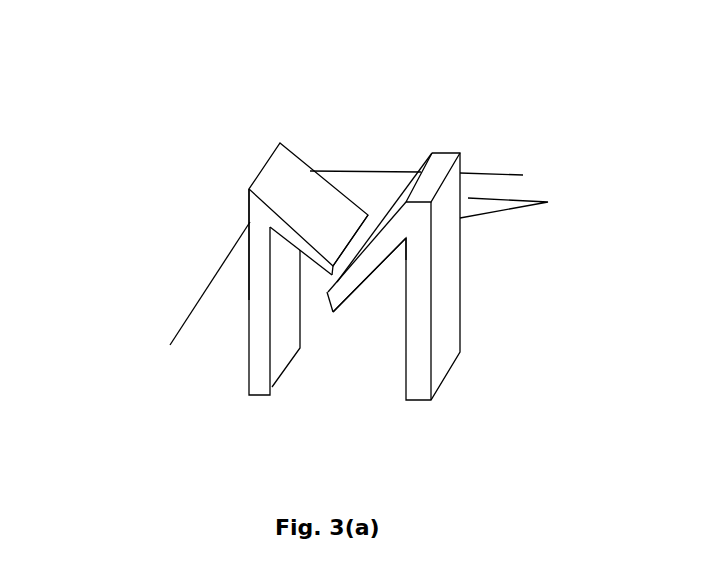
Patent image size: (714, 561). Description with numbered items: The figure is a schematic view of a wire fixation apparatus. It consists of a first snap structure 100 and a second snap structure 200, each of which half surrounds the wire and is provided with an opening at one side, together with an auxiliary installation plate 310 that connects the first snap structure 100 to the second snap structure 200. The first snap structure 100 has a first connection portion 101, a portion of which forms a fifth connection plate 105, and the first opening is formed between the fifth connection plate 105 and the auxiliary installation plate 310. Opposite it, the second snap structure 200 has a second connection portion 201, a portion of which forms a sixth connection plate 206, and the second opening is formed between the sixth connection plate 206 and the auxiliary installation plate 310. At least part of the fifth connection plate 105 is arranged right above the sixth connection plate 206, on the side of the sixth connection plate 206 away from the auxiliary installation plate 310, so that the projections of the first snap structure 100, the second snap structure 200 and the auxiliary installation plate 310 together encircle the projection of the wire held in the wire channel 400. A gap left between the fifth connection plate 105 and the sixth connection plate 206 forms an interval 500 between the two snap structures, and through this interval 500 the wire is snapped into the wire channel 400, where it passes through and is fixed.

The first snap structure 100 is at (246, 323).
The first connection portion 101 is at (257, 222).
The fifth connection plate 105 is at (310, 202).
The second snap structure 200 is at (459, 323).
The second connection portion 201 is at (468, 198).
The sixth connection plate 206 is at (390, 237).
The auxiliary installation plate 310 is at (362, 185).
The wire channel 400 is at (367, 338).
The interval 500 is at (335, 272).